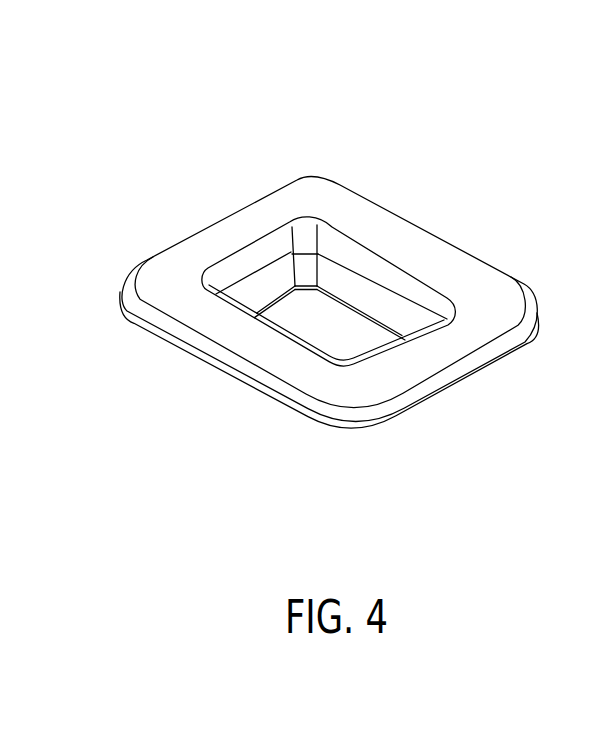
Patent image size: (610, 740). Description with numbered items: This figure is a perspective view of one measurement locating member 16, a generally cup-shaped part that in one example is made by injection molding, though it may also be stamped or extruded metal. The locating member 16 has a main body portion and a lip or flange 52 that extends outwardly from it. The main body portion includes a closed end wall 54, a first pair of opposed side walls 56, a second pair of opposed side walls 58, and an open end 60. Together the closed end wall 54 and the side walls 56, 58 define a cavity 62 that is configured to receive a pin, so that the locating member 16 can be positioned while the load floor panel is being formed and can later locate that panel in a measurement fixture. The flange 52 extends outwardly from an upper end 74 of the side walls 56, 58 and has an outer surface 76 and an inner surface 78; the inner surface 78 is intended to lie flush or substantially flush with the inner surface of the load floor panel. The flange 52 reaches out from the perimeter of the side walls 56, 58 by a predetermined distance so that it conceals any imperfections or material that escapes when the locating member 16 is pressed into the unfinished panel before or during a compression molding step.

The measurement locating member 16 is at (489, 118).
The flange 52 is at (169, 265).
The closed end wall 54 is at (356, 340).
The first pair of opposed side walls 56 is at (411, 318).
The second pair of opposed side walls 58 is at (250, 290).
The open end 60 is at (421, 354).
The cavity 62 is at (301, 301).
The upper end 74 is at (362, 258).
The outer surface 76 is at (307, 193).
The inner surface 78 is at (352, 431).